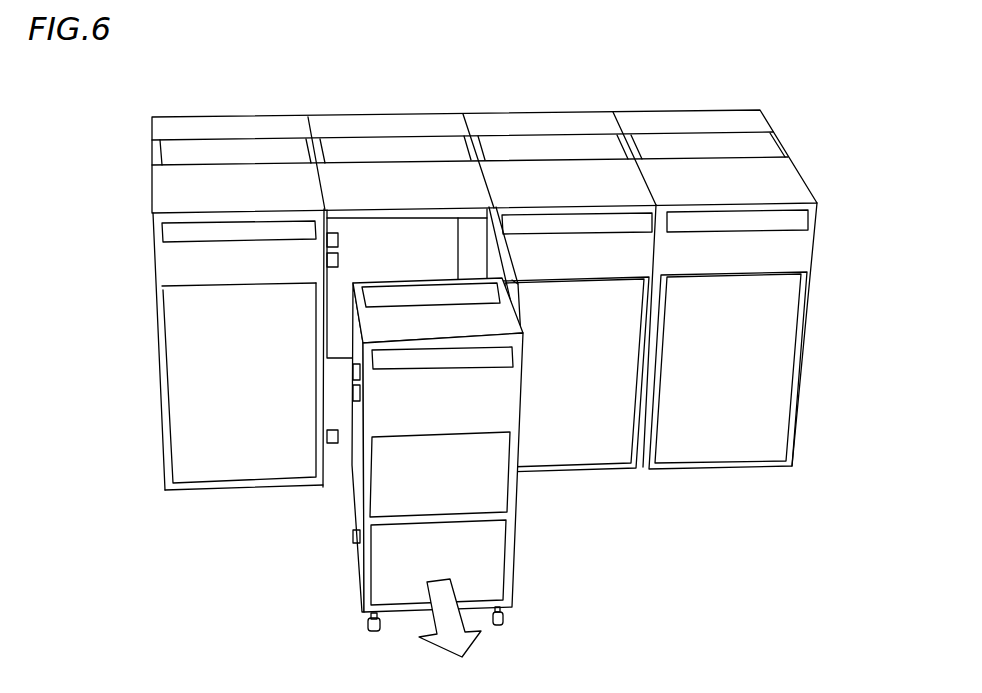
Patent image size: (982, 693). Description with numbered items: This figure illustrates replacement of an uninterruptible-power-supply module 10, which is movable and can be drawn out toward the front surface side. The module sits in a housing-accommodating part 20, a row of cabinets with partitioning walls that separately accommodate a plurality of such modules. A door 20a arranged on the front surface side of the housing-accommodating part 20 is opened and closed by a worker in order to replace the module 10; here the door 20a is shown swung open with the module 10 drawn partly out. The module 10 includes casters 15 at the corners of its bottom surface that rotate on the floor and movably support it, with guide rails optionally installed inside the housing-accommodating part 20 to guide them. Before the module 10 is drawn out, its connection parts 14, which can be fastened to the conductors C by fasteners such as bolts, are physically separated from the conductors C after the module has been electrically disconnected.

The uninterruptible-power-supply module 10 is at (532, 514).
The connection part 14 is at (347, 383).
The caster 15 is at (361, 628).
The housing-accommodating part 20 is at (792, 180).
The door 20a is at (510, 253).
The conductor C is at (322, 245).